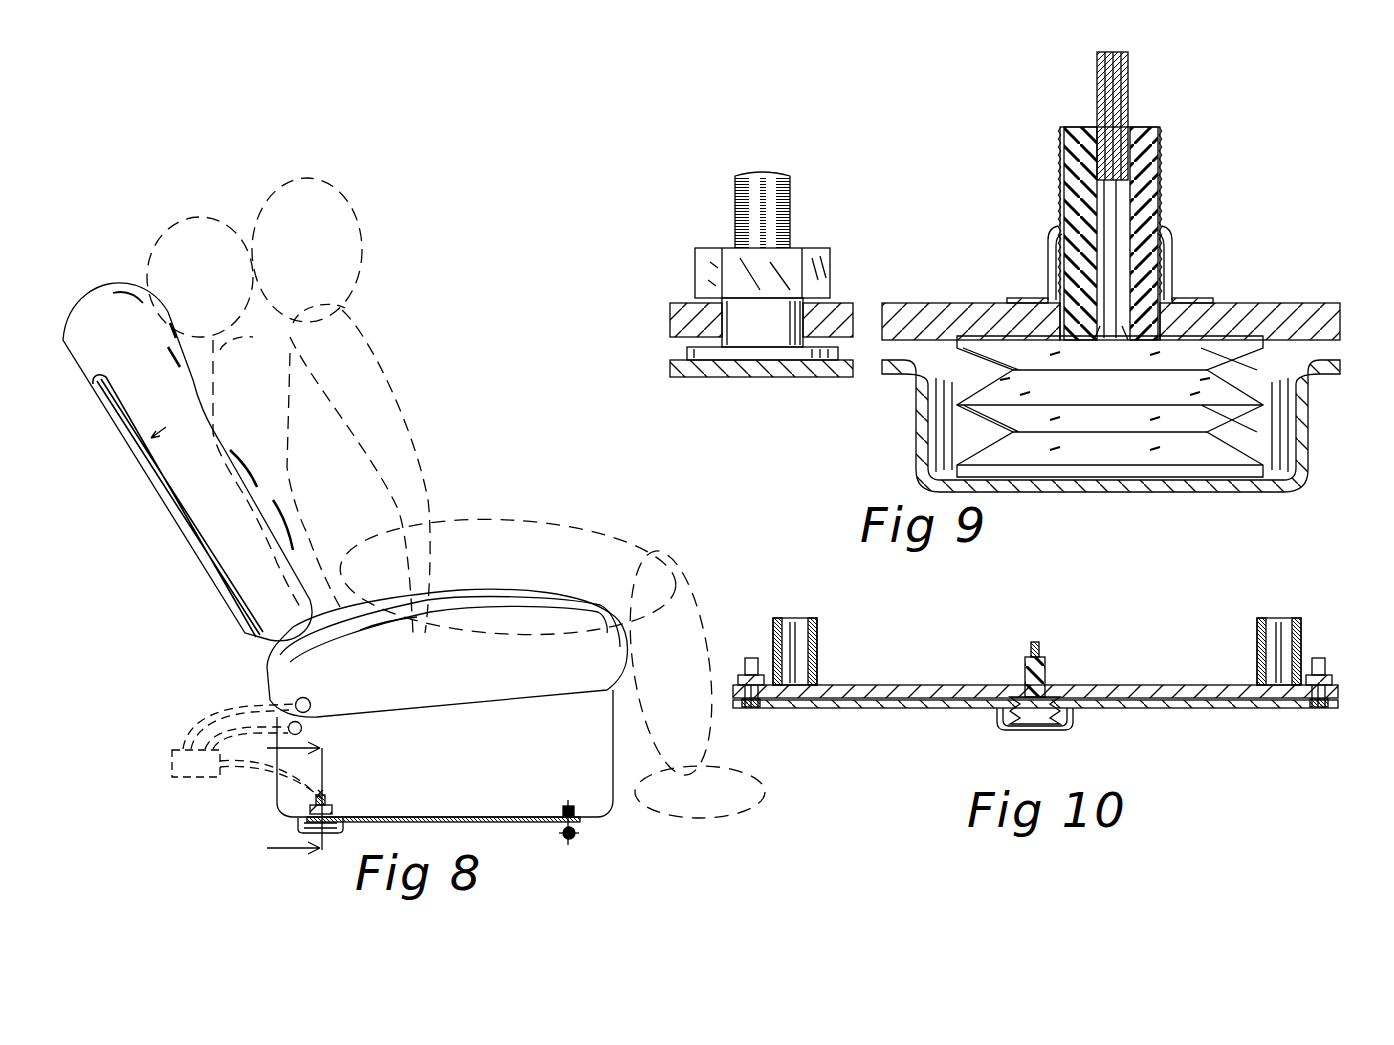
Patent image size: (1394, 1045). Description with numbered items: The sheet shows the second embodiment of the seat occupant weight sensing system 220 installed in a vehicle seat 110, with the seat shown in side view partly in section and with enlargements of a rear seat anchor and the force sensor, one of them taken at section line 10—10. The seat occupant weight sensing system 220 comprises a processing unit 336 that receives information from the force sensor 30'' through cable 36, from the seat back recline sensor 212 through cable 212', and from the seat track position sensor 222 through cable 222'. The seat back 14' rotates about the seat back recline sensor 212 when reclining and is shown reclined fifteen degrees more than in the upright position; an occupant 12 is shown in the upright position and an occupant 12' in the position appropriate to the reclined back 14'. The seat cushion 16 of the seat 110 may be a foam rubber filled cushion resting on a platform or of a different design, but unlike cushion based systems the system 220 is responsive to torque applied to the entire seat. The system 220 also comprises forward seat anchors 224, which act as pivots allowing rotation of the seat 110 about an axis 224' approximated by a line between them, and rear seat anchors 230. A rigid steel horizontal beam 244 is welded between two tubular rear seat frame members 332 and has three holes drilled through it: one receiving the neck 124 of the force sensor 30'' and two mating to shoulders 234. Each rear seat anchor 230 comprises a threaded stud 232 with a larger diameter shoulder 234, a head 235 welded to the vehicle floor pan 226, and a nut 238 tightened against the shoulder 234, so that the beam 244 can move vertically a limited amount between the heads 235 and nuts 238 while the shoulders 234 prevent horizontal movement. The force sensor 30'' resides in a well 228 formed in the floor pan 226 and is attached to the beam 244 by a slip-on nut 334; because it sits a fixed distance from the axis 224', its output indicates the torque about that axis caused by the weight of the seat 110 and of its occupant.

In FIG. 8, the section line 10 is at (278, 799).
In FIG. 8, the occupant 12 is at (508, 498).
In FIG. 8, the occupant 12' is at (243, 380).
In FIG. 8, the seat back 14' is at (323, 540).
In FIG. 8, the seat cushion 16 is at (482, 588).
In FIG. 8, the cable 36 is at (257, 770).
In FIG. 9, the cable 36 is at (1128, 78).
In FIG. 8, the seat 110 is at (212, 667).
In FIG. 9, the neck 124 is at (1150, 212).
In FIG. 8, the seat back recline sensor 212 is at (335, 700).
In FIG. 8, the cable 212' is at (239, 715).
In FIG. 8, the seat occupant weight sensing system 220 is at (139, 769).
In FIG. 8, the seat track position sensor 222 is at (327, 734).
In FIG. 8, the cable 222' is at (211, 729).
In FIG. 8, the forward seat anchors 224 is at (539, 819).
In FIG. 8, the axis 224' is at (602, 845).
In FIG. 8, the vehicle floor pan 226 is at (482, 821).
In FIG. 9, the vehicle floor pan 226 is at (732, 377).
In FIG. 10, the vehicle floor pan 226 is at (910, 708).
In FIG. 8, the well 228 is at (340, 829).
In FIG. 9, the well 228 is at (1190, 492).
In FIG. 10, the well 228 is at (1033, 728).
In FIG. 9, the rear seat anchors 230 is at (852, 170).
In FIG. 10, the rear seat anchors 230 is at (780, 714).
In FIG. 9, the threaded stud 232 is at (763, 170).
In FIG. 10, the threaded stud 232 is at (750, 652).
In FIG. 9, the shoulder 234 is at (762, 328).
In FIG. 9, the head 235 is at (742, 355).
In FIG. 9, the nut 238 is at (815, 248).
In FIG. 10, the nut 238 is at (742, 660).
In FIG. 8, the horizontal beam 244 is at (325, 803).
In FIG. 9, the horizontal beam 244 is at (685, 303).
In FIG. 10, the horizontal beam 244 is at (920, 685).
In FIG. 8, the force sensor 30'' is at (358, 802).
In FIG. 9, the force sensor 30'' is at (1125, 271).
In FIG. 10, the force sensor 30'' is at (1091, 674).
In FIG. 10, the tubular seat frame members 332 is at (817, 650).
In FIG. 9, the slip-on nut 334 is at (1173, 263).
In FIG. 8, the processing unit 336 is at (196, 763).